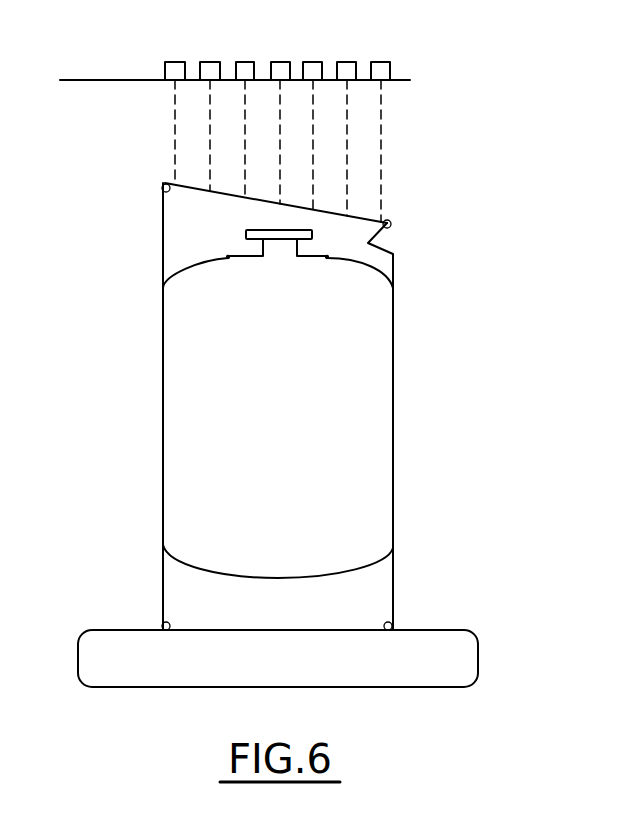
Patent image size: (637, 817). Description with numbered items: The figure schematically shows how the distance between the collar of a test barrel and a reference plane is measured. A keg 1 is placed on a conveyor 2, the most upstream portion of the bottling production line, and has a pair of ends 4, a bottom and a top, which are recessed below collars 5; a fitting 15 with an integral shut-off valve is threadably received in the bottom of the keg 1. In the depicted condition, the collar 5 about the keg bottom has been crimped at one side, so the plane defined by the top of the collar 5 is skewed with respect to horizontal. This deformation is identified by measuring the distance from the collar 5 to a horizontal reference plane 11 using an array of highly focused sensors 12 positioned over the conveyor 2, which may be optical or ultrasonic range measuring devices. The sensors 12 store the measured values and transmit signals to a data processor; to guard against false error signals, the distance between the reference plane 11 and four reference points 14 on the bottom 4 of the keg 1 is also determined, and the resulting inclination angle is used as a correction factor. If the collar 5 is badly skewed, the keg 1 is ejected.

The keg 1 is at (425, 410).
The conveyor 2 is at (116, 640).
The ends 4 is at (192, 273).
The collar 5 is at (391, 223).
The reference plane 11 is at (96, 80).
The sensors 12 is at (380, 70).
The reference points 14 is at (230, 259).
The fitting 15 is at (258, 230).